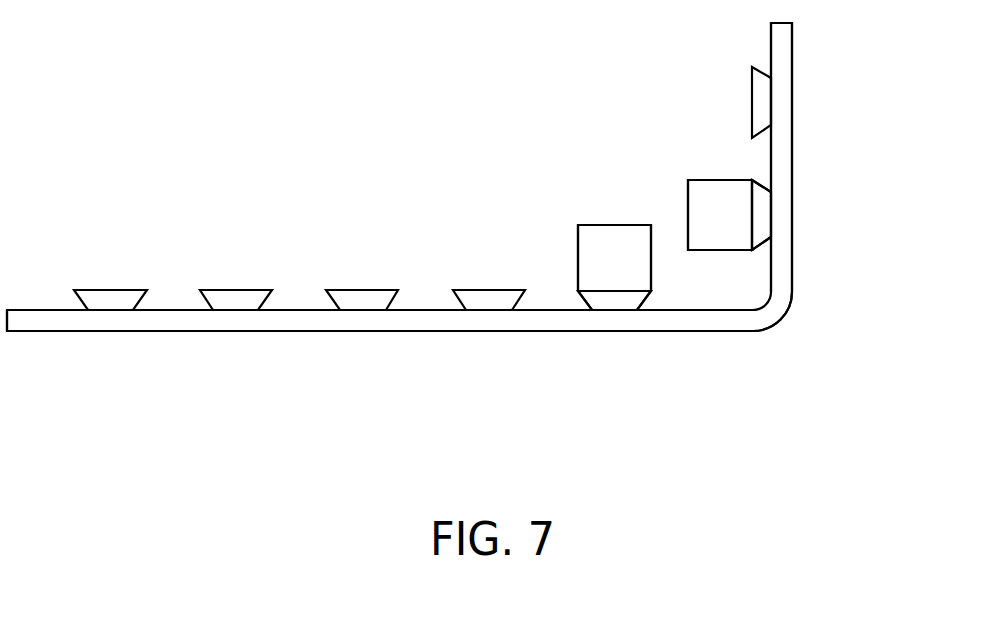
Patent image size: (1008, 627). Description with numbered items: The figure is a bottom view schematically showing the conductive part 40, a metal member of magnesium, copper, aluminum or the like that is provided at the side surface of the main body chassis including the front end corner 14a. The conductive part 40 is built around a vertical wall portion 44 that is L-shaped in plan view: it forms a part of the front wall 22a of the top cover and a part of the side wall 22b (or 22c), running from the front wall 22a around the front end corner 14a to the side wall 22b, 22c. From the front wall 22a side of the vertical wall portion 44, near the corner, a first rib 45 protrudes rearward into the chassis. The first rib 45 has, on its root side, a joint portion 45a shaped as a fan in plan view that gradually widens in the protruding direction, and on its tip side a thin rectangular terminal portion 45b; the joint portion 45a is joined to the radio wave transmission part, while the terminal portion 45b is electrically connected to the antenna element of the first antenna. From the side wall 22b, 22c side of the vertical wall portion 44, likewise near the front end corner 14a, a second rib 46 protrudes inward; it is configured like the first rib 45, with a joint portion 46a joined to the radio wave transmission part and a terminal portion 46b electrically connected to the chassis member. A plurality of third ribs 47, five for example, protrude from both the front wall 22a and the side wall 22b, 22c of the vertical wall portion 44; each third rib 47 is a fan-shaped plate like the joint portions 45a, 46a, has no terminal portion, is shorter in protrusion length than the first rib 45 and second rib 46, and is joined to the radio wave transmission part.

The conductive part 40 is at (37, 77).
The vertical wall portion 44 is at (423, 333).
The front wall 22a is at (282, 319).
The left side wall 22b is at (787, 90).
The right side wall 22c is at (812, 97).
The front end corner 14a is at (778, 315).
The third rib 47 is at (235, 300).
The first rib 45 is at (703, 388).
The joint portion 45a is at (610, 300).
The terminal portion 45b is at (640, 253).
The second rib 46 is at (860, 137).
The joint portion 46a is at (767, 212).
The terminal portion 46b is at (718, 190).